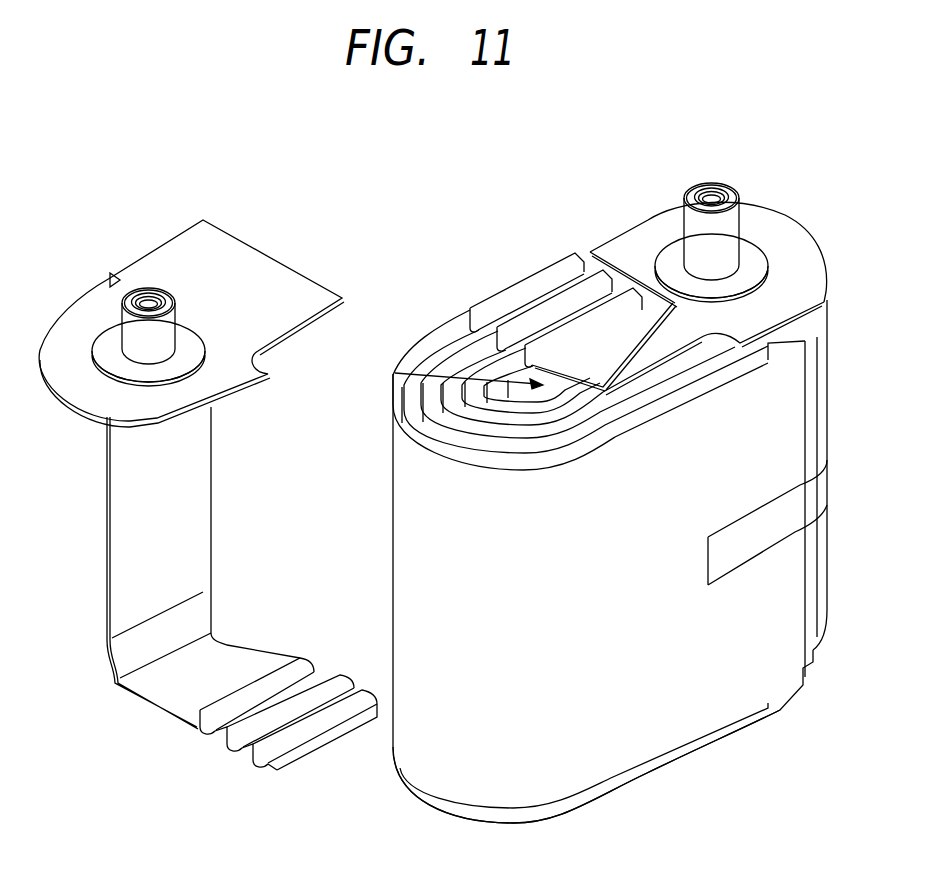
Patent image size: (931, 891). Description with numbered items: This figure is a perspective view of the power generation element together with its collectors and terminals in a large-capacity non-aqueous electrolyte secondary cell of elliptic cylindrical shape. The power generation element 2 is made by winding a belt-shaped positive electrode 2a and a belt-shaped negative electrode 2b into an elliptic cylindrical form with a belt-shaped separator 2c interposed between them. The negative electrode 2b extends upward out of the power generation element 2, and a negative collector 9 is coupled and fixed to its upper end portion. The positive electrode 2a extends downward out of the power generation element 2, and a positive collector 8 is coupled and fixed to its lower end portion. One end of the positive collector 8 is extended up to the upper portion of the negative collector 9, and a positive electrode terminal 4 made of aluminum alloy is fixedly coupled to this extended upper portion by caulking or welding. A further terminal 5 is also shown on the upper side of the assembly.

The power generation element 2 is at (374, 514).
The positive electrode 2a is at (653, 770).
The negative electrode 2b is at (458, 343).
The separator 2c is at (770, 680).
The positive electrode terminal 4 is at (168, 300).
The battery terminal 5 is at (680, 227).
The positive collector 8 is at (98, 513).
The negative collector 9 is at (777, 235).